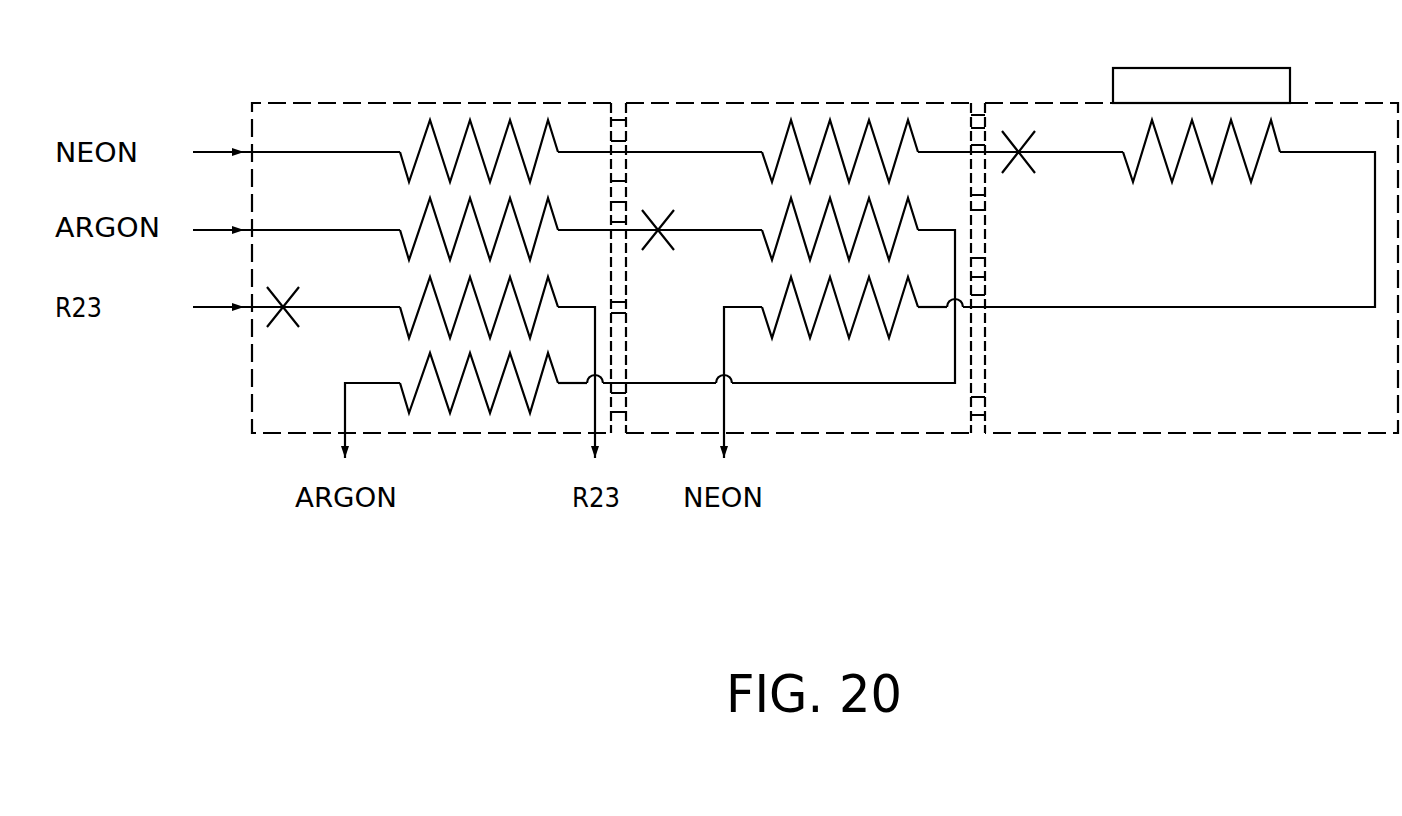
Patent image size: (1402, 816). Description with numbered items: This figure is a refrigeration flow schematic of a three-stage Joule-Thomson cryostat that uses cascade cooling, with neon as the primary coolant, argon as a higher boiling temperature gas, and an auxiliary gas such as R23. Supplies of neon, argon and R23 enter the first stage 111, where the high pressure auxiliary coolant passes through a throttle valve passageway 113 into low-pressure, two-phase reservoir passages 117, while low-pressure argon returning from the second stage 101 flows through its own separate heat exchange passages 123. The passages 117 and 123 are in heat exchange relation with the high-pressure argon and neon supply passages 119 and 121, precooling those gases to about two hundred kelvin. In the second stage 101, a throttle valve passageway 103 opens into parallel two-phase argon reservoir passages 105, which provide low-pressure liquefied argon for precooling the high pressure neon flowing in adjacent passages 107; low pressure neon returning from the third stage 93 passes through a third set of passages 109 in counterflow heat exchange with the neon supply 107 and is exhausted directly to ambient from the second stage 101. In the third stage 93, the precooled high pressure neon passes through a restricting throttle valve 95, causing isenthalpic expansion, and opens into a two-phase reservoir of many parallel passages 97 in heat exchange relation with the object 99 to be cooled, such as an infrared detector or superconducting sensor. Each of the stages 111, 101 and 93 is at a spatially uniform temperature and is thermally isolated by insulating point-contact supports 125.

The third stage 93 is at (1042, 100).
The throttle valve 95 is at (1030, 137).
The parallel passages 97 is at (1163, 185).
The object to be cooled 99 is at (1263, 68).
The second stage 101 is at (666, 100).
The throttle valve passageway 103 is at (669, 215).
The two-phase argon reservoir passages 105 is at (782, 215).
The high pressure neon supply passages 107 is at (782, 140).
The third set of passages 109 is at (782, 293).
The first stage 111 is at (567, 100).
The throttle valve passageway 113 is at (296, 295).
The two-phase reservoir passages 117 is at (420, 294).
The high-pressure argon supply passage 119 is at (420, 215).
The high-pressure neon supply passage 121 is at (420, 140).
The separate heat exchange passages 123 is at (420, 370).
The insulating point-contact supports 125 is at (626, 307).